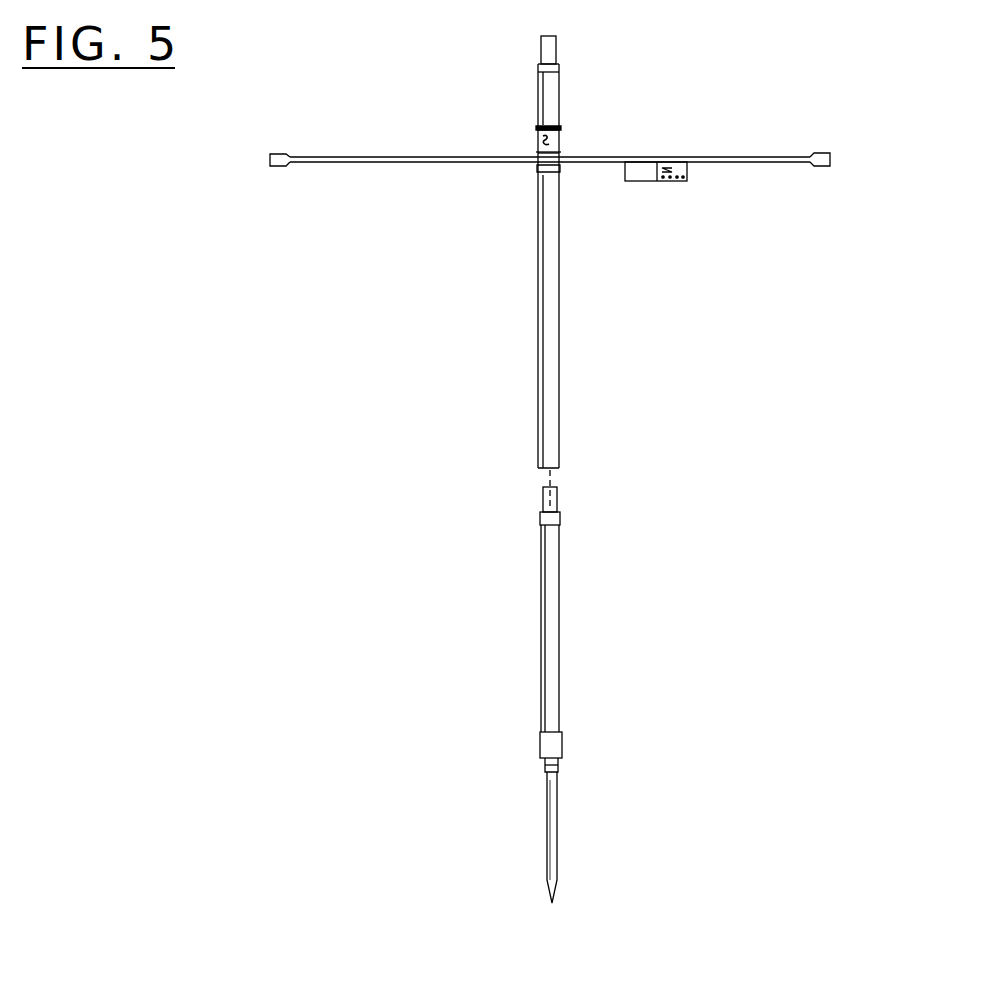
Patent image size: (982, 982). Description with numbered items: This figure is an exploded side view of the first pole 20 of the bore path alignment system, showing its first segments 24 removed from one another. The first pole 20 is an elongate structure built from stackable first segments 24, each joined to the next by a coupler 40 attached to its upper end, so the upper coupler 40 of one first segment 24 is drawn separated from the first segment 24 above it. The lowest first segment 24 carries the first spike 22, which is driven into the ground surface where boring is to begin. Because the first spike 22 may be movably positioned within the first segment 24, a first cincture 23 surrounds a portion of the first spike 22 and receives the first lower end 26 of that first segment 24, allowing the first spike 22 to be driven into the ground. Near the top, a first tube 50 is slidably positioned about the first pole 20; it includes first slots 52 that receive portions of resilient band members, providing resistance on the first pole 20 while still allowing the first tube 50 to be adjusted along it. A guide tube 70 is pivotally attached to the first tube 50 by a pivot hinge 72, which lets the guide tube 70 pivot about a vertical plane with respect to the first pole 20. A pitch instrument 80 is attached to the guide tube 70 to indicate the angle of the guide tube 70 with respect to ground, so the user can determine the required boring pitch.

The first pole 20 is at (562, 630).
The first spike 22 is at (555, 813).
The first cincture 23 is at (545, 770).
The first segment 24 is at (556, 400).
The first lower end 26 is at (550, 748).
The coupler 40 is at (550, 47).
The first tube 50 is at (540, 130).
The first slot 52 is at (560, 128).
The guide tube 70 is at (780, 155).
The pivot hinge 72 is at (538, 148).
The pitch instrument 80 is at (680, 181).